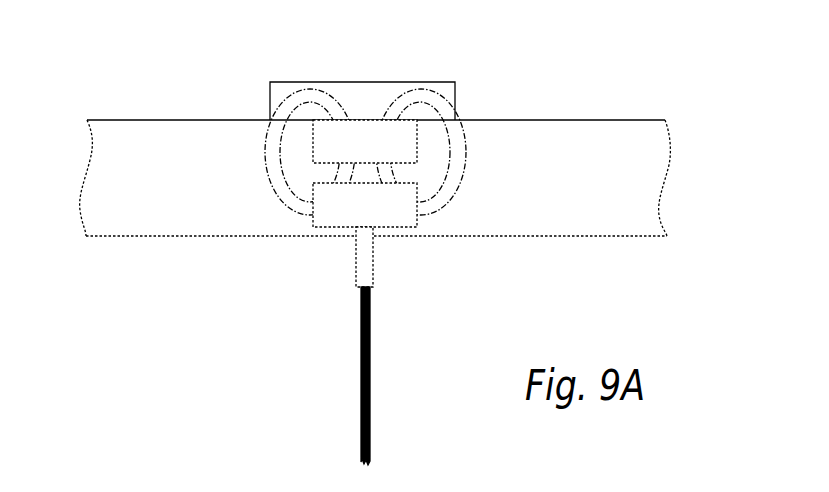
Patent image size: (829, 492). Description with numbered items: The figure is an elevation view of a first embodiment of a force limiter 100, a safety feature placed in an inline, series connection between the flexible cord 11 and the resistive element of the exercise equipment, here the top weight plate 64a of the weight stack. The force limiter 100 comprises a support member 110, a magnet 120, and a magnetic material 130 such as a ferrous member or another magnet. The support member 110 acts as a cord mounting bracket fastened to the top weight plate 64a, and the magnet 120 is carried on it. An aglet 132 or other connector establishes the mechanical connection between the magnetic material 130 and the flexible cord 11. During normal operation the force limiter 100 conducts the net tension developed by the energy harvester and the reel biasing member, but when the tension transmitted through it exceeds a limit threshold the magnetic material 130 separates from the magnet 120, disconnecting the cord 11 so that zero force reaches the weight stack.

The top weight plate 64a is at (607, 145).
The support member 110 is at (367, 97).
The magnet 120 is at (405, 142).
The magnetic material 130 is at (398, 218).
The aglet 132 is at (368, 267).
The flexible cord 11 is at (369, 372).
The force limiter 100 is at (332, 248).